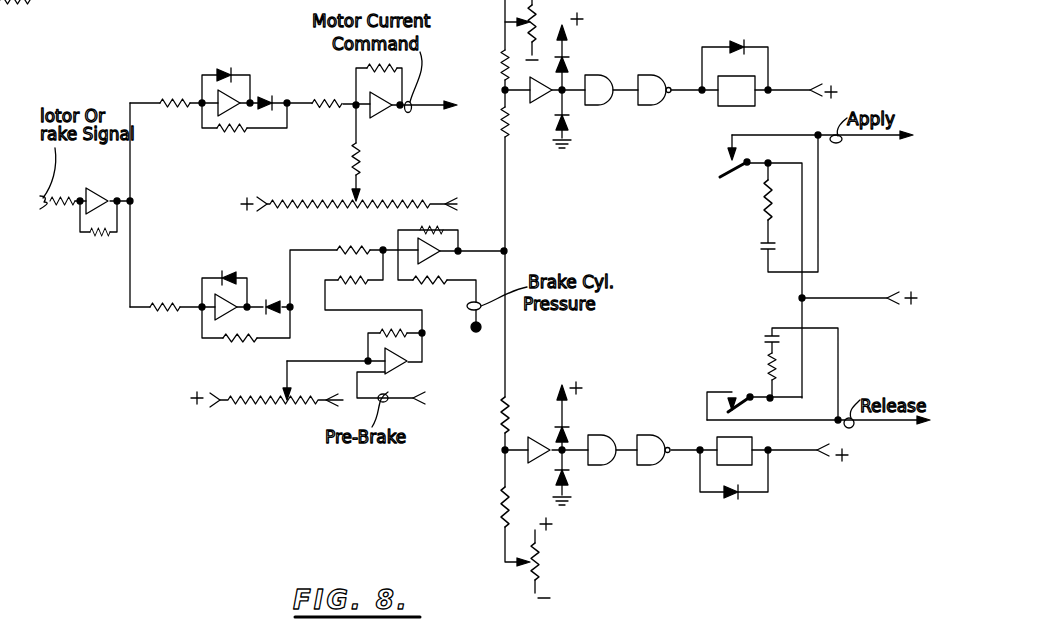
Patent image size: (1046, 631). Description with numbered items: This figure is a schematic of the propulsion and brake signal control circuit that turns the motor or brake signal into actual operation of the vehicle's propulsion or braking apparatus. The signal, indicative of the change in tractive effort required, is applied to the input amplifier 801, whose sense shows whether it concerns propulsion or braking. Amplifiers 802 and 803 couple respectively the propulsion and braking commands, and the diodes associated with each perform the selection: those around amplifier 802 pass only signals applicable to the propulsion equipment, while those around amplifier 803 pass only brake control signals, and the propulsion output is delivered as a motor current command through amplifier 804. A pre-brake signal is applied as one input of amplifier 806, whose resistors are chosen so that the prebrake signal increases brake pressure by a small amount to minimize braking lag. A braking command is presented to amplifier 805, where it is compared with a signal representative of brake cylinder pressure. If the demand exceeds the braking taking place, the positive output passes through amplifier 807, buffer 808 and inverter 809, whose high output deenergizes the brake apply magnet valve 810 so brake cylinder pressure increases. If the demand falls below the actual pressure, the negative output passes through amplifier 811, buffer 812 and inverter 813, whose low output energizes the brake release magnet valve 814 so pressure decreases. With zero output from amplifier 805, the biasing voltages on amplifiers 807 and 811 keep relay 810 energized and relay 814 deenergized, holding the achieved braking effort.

The amplifier 801 is at (104, 180).
The amplifier 802 is at (244, 94).
The amplifier 803 is at (234, 304).
The motor current command amplifier 804 is at (378, 115).
The amplifier 805 is at (441, 257).
The amplifier 806 is at (408, 362).
The amplifier 807 is at (537, 98).
The buffer 808 is at (597, 85).
The inverter 809 is at (654, 85).
The brake apply magnet valve 810 is at (735, 73).
The amplifier 811 is at (536, 440).
The buffer 812 is at (599, 436).
The inverter 813 is at (654, 443).
The brake release magnet valve 814 is at (734, 468).